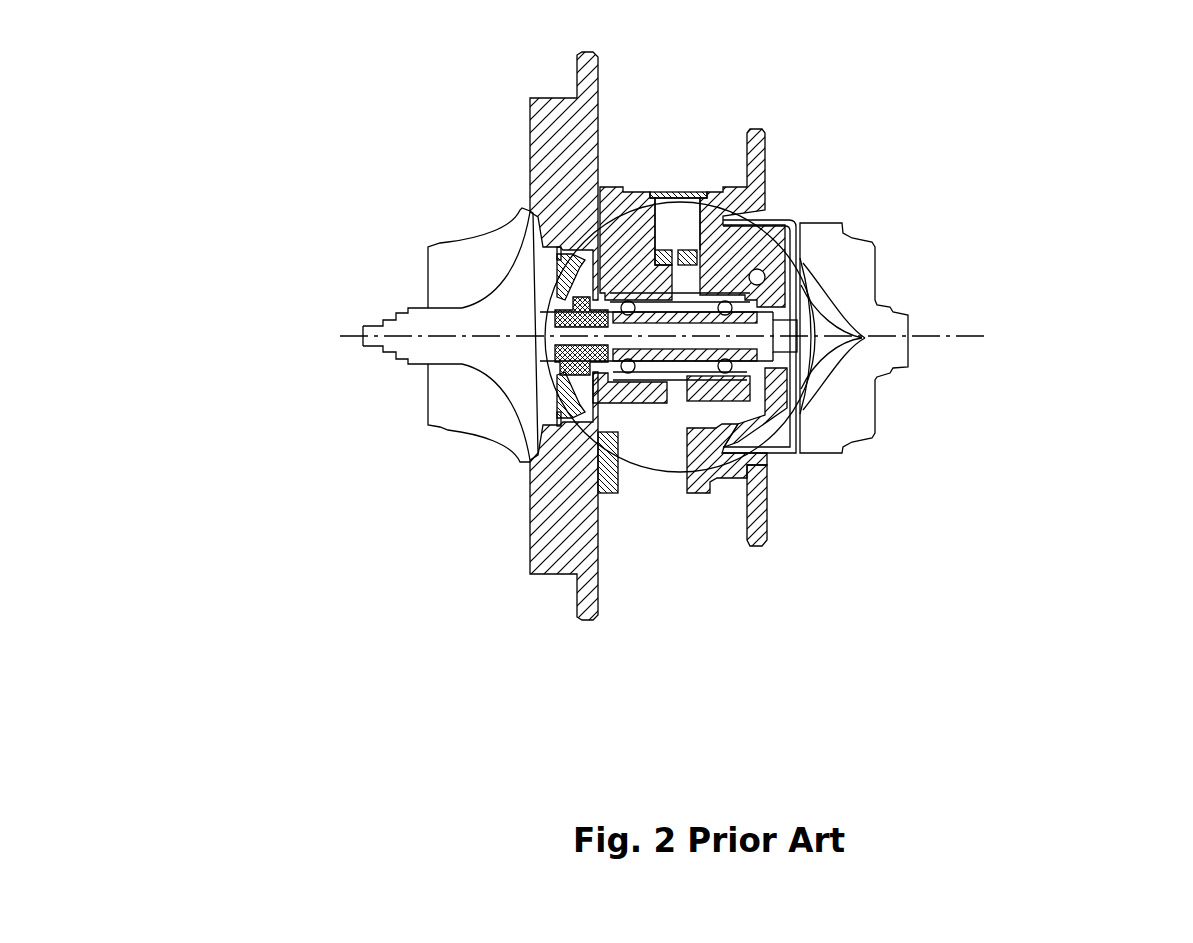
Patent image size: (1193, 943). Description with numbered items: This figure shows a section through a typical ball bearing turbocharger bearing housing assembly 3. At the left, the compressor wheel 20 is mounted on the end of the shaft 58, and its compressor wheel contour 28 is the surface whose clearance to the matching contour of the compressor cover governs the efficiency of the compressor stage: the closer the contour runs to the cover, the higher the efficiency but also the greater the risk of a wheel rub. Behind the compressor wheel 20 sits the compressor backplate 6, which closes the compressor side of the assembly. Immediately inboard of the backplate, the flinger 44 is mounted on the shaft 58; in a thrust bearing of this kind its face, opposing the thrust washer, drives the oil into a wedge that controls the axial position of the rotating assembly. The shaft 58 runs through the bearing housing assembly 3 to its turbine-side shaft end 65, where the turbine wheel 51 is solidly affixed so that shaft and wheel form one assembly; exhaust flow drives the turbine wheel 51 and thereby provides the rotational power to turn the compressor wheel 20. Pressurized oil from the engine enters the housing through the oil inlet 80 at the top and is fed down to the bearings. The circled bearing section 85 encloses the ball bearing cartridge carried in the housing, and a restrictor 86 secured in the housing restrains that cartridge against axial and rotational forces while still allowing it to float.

The bearing housing assembly 3 is at (768, 148).
The compressor backplate 6 is at (572, 148).
The compressor wheel 20 is at (335, 468).
The compressor wheel contour 28 is at (486, 451).
The flinger 44 is at (555, 371).
The turbine wheel 51 is at (833, 300).
The shaft 58 is at (848, 338).
The shaft end 65 is at (792, 343).
The oil inlet 80 is at (685, 223).
The bearing section 85 is at (655, 483).
The restrictor 86 is at (767, 182).